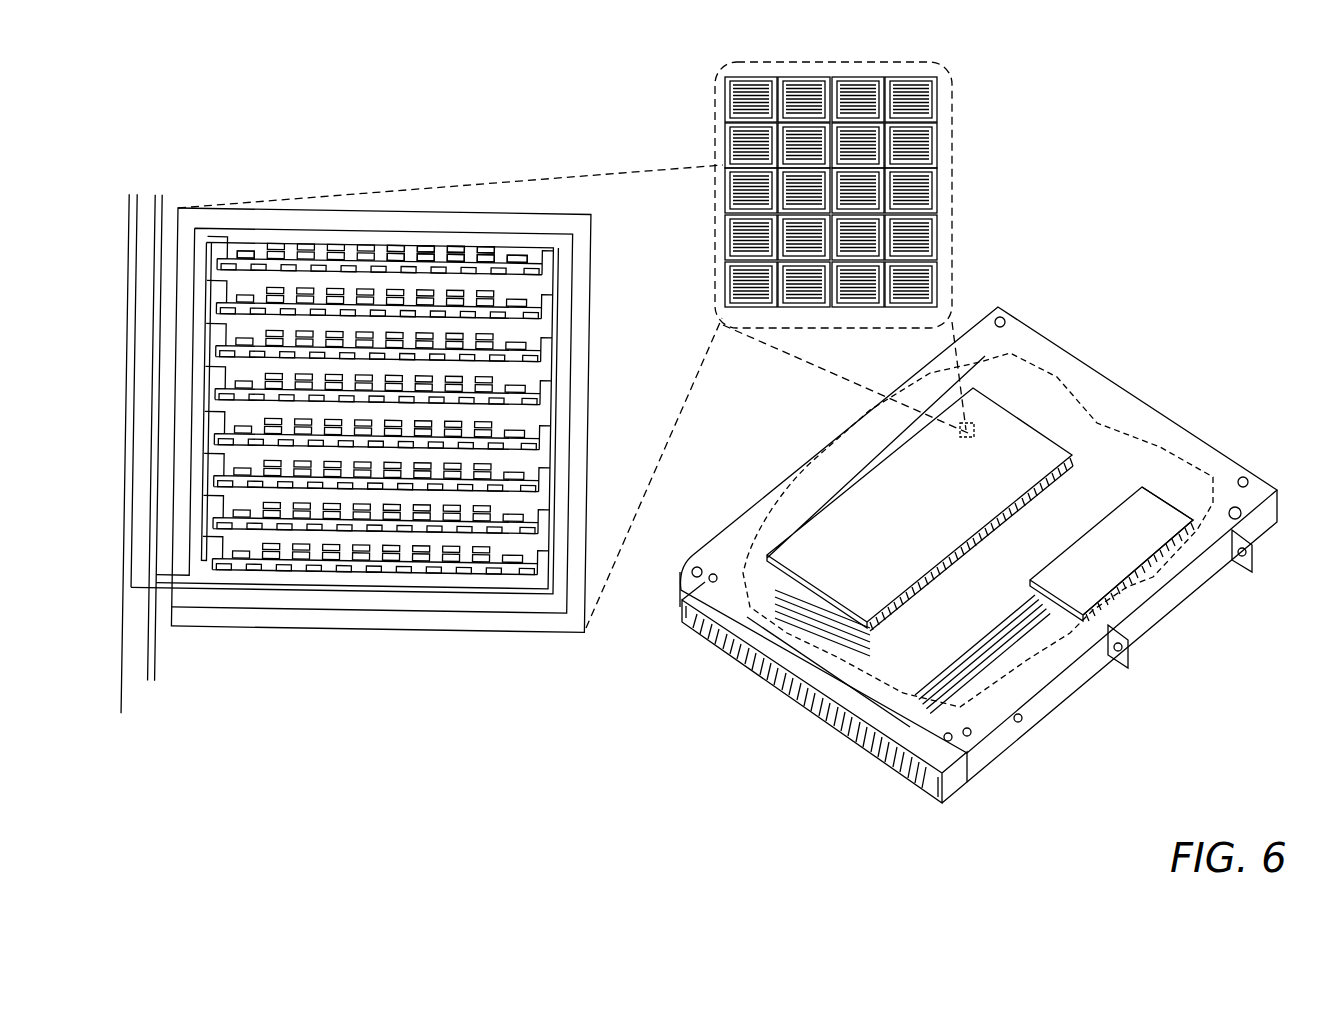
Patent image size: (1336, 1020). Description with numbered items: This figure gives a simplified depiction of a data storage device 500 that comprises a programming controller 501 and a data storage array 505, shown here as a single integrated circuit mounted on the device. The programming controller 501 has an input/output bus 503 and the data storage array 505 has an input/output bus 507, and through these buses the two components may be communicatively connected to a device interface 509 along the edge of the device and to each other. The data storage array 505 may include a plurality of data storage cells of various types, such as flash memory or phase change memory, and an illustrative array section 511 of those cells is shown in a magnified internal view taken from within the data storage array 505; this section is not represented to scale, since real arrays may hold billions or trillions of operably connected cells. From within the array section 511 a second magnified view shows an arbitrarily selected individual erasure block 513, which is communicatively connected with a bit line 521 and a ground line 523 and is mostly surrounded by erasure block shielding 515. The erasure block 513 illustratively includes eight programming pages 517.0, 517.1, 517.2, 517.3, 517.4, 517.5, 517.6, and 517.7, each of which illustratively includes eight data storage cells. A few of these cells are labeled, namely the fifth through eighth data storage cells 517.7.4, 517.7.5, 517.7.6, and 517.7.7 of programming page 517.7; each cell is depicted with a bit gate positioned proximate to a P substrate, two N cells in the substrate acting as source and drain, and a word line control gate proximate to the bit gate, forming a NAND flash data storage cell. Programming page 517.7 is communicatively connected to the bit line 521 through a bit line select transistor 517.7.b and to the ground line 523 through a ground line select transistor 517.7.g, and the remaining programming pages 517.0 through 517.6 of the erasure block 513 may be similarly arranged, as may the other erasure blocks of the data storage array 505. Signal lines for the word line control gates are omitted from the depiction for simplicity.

The data storage device 500 is at (1257, 217).
The programming controller 501 is at (1142, 584).
The input/output bus 503 is at (1052, 620).
The data storage array 505 is at (1049, 427).
The input/output bus 507 is at (783, 598).
The device interface 509 is at (800, 698).
The illustrative array section 511 is at (987, 423).
The erasure block 513 is at (719, 184).
The erasure block shielding 515 is at (390, 634).
The programming page 517.0 is at (569, 560).
The programming page 517.1 is at (569, 517).
The programming page 517.2 is at (569, 475).
The programming page 517.3 is at (569, 436).
The programming page 517.4 is at (569, 394).
The programming page 517.5 is at (569, 349).
The programming page 517.6 is at (569, 301).
The programming page 517.7 is at (569, 259).
The bit line select transistor 517.7.b is at (242, 247).
The data storage cell 517.7.4 is at (390, 246).
The data storage cell 517.7.5 is at (426, 245).
The data storage cell 517.7.6 is at (458, 245).
The data storage cell 517.7.7 is at (488, 244).
The ground line select transistor 517.7.g is at (518, 250).
The bit line 521 is at (153, 667).
The ground line 523 is at (128, 700).